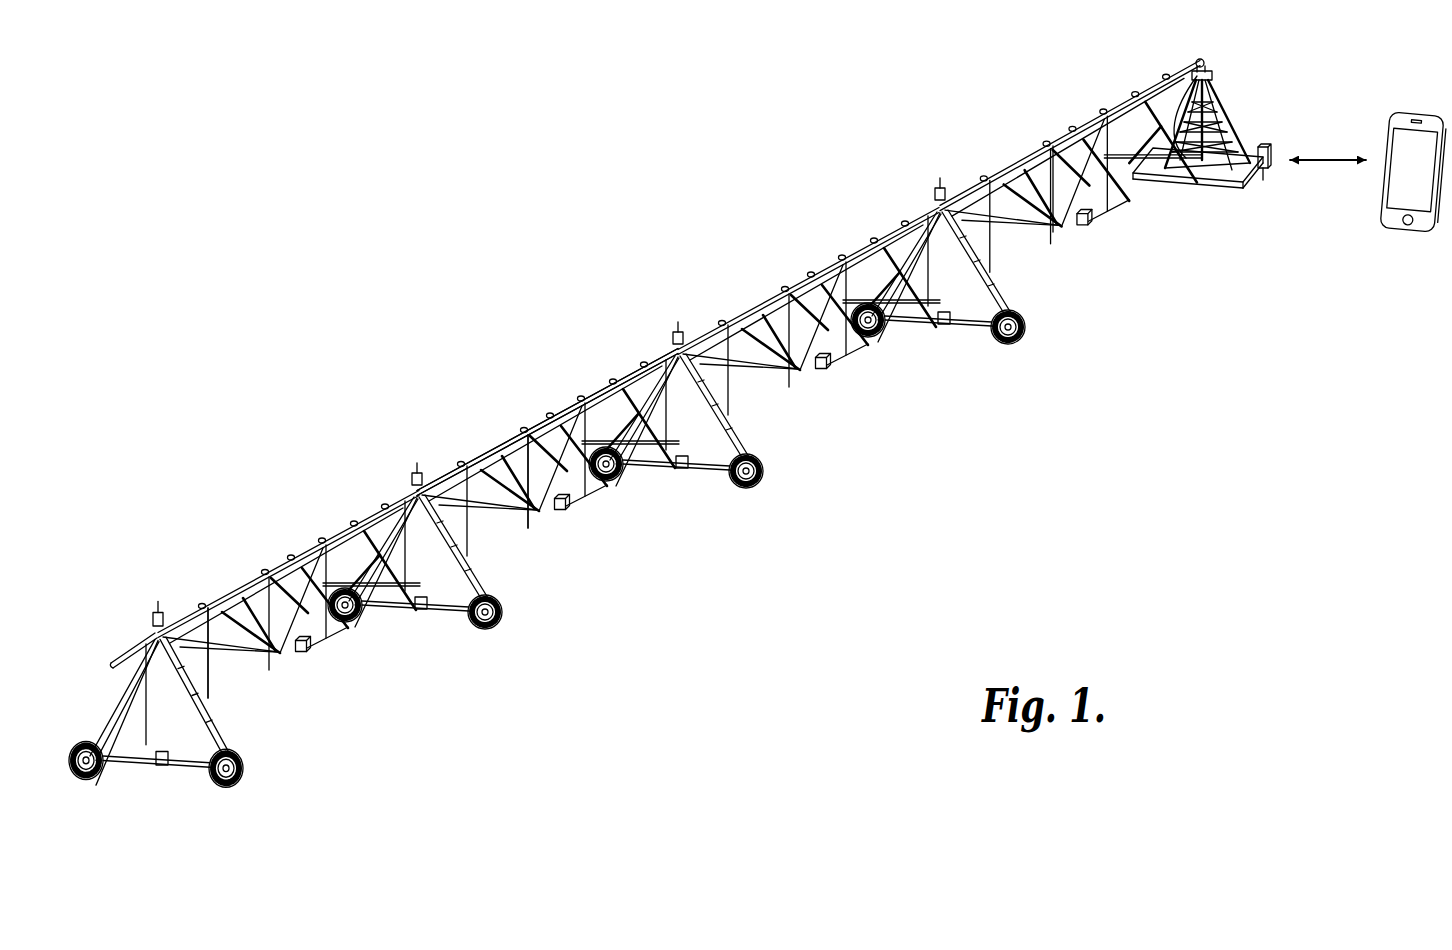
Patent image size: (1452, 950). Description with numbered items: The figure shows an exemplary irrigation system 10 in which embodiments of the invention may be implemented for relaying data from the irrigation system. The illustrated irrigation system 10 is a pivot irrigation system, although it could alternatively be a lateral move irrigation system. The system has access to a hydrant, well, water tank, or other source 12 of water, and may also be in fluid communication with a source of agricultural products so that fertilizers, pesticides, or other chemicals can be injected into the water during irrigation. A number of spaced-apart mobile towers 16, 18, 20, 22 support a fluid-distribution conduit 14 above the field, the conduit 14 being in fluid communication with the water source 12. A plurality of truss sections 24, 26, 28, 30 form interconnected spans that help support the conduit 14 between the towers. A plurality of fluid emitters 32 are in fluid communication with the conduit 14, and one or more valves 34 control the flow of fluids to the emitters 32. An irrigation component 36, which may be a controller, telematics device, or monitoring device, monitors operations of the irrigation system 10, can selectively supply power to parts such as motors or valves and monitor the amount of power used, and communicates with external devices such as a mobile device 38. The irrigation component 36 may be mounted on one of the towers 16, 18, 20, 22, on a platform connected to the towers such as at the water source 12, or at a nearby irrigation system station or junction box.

The irrigation system 10 is at (518, 236).
The source of water 12 is at (1191, 125).
The fluid-distribution conduit 14 is at (627, 385).
The mobile tower 16 is at (173, 622).
The mobile tower 18 is at (437, 469).
The mobile tower 20 is at (694, 320).
The mobile tower 22 is at (961, 168).
The truss section 24 is at (360, 650).
The truss section 26 is at (567, 456).
The truss section 28 is at (881, 350).
The truss section 30 is at (1147, 200).
The fluid emitter 32 is at (210, 693).
The valve 34 is at (1197, 63).
The irrigation component 36 is at (1267, 168).
The mobile device 38 is at (1397, 222).